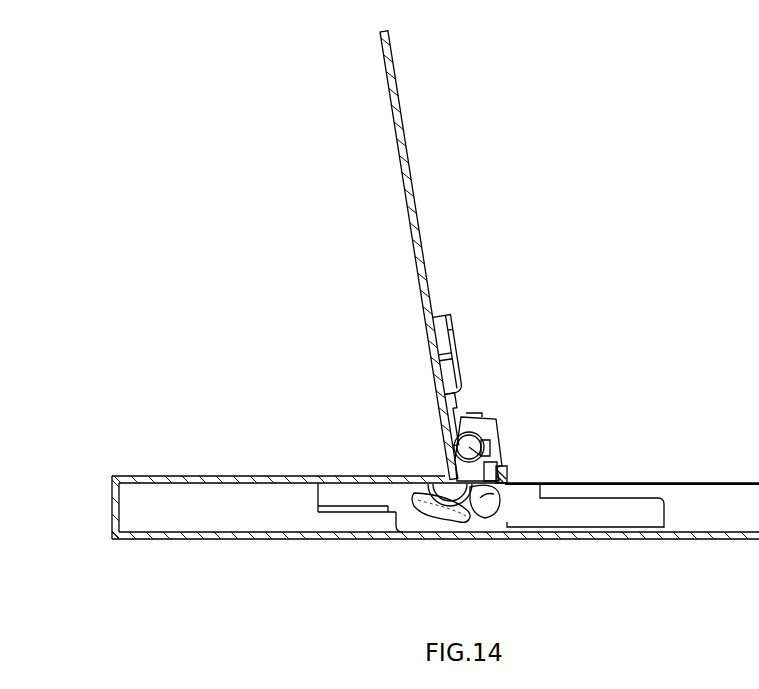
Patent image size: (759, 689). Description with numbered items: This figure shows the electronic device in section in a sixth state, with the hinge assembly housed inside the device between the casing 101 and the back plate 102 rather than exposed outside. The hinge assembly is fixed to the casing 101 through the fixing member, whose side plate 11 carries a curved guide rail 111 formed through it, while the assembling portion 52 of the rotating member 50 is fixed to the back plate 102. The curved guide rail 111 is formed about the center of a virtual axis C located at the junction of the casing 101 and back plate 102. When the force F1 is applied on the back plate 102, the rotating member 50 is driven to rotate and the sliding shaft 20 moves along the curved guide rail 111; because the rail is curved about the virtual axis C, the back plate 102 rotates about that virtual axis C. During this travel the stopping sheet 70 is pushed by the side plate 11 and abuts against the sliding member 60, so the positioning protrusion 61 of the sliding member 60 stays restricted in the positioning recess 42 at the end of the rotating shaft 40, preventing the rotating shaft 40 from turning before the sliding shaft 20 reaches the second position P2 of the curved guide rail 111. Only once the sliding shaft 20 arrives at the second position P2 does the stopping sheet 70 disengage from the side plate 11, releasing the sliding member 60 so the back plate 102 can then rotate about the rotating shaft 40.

The force F1 is at (401, 100).
The back plate 102 is at (424, 188).
The casing 101 is at (297, 475).
The side plate 11 is at (612, 515).
The curved guide rail 111 is at (430, 522).
The virtual axis C is at (446, 468).
The sliding shaft 20 is at (462, 522).
The second position P2 is at (487, 502).
The assembling portion 52 is at (466, 333).
The rotating member 50 is at (462, 405).
The rotating shaft 40 is at (485, 428).
The positioning protrusion 61 is at (455, 443).
The positioning recess 42 is at (484, 447).
The sliding member 60 is at (500, 460).
The stopping sheet 70 is at (505, 480).